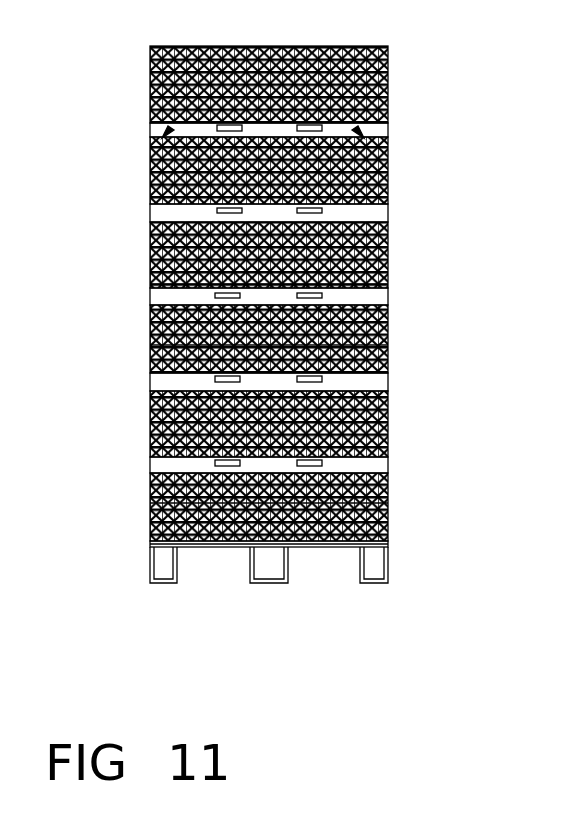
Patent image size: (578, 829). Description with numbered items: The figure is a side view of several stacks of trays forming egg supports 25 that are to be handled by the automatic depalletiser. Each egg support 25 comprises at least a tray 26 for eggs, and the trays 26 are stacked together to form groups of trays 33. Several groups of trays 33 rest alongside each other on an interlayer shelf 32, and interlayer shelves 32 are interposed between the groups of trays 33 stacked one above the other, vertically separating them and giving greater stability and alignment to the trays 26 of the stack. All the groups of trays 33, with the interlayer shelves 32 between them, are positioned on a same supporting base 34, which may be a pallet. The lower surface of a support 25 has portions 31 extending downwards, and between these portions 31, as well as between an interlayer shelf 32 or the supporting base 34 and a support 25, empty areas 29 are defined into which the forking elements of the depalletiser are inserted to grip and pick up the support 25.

The egg support 25 is at (400, 183).
The tray 26 is at (404, 284).
The empty area 29 is at (152, 342).
The portion 31 is at (150, 157).
The interlayer shelf 32 is at (172, 212).
The group of trays 33 is at (404, 347).
The supporting base 34 is at (136, 549).